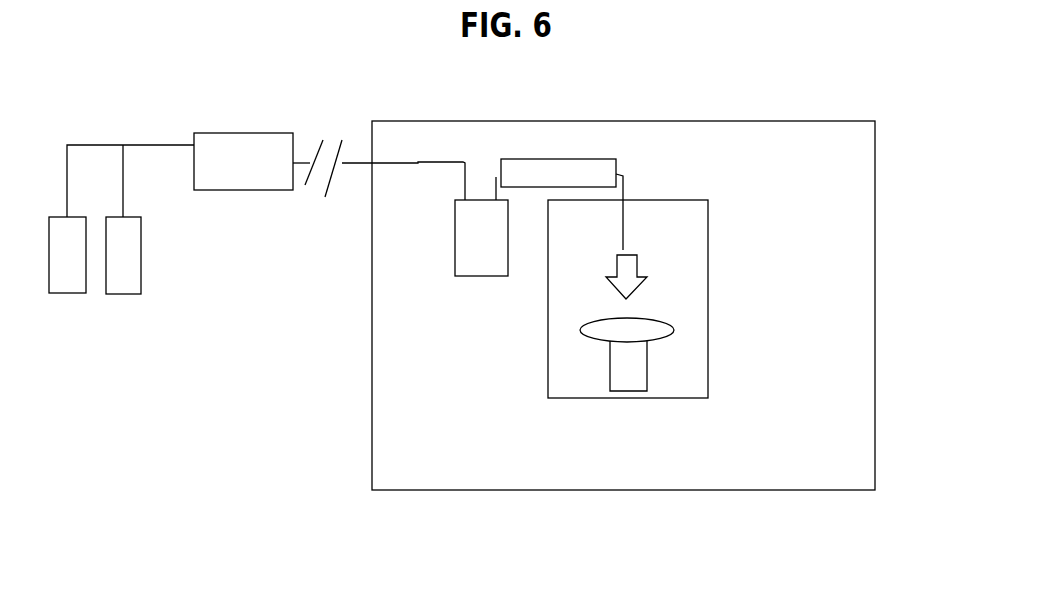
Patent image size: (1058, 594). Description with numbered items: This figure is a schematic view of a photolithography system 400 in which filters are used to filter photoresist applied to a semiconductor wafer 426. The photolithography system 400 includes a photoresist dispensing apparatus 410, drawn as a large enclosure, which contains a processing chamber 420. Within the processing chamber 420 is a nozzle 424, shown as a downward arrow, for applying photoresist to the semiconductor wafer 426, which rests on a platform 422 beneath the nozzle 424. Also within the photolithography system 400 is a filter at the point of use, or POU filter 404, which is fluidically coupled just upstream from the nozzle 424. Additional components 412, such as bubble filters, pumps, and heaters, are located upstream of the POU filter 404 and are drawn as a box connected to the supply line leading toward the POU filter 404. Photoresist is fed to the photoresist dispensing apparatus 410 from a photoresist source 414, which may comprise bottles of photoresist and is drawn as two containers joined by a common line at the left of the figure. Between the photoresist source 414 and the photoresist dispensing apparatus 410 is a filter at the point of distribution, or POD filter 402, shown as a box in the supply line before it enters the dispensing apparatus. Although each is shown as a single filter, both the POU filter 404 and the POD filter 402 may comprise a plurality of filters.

The photolithography system 400 is at (254, 150).
The POD filter 402 is at (248, 202).
The POU filter 404 is at (549, 156).
The photoresist dispensing apparatus 410 is at (358, 475).
The additional components 412 is at (450, 248).
The photoresist source 414 is at (117, 315).
The processing chamber 420 is at (718, 337).
The platform 422 is at (608, 383).
The nozzle 424 is at (643, 262).
The semiconductor wafer 426 is at (667, 343).